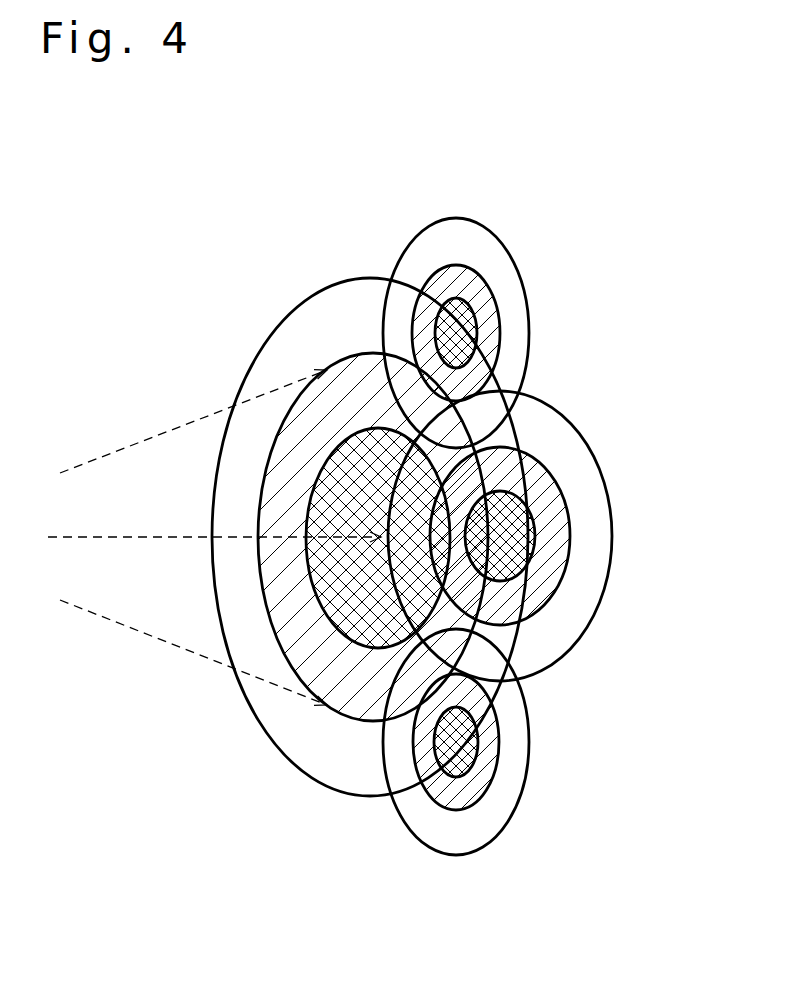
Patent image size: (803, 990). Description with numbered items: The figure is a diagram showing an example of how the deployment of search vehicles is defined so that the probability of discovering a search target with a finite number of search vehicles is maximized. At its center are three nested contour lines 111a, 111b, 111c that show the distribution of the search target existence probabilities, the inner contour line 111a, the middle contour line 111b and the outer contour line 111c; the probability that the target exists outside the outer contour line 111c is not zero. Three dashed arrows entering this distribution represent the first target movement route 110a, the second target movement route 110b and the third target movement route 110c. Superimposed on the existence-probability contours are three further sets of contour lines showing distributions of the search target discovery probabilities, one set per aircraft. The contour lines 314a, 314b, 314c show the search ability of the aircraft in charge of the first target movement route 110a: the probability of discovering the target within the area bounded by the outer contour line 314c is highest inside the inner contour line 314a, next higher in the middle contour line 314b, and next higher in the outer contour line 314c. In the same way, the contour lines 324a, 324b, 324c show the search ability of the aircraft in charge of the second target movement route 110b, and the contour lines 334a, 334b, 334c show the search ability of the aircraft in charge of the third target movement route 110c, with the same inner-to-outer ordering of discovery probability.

The first target movement route 110a is at (117, 450).
The second target movement route 110b is at (115, 537).
The third target movement route 110c is at (103, 618).
The contour line 111a is at (313, 603).
The contour line 111b is at (338, 714).
The contour line 111c is at (360, 796).
The contour line 314a is at (480, 287).
The contour line 314b is at (453, 265).
The contour line 314c is at (448, 220).
The contour line 324a is at (527, 460).
The contour line 324b is at (565, 503).
The contour line 324c is at (612, 548).
The contour line 334a is at (490, 793).
The contour line 334b is at (450, 812).
The contour line 334c is at (447, 857).